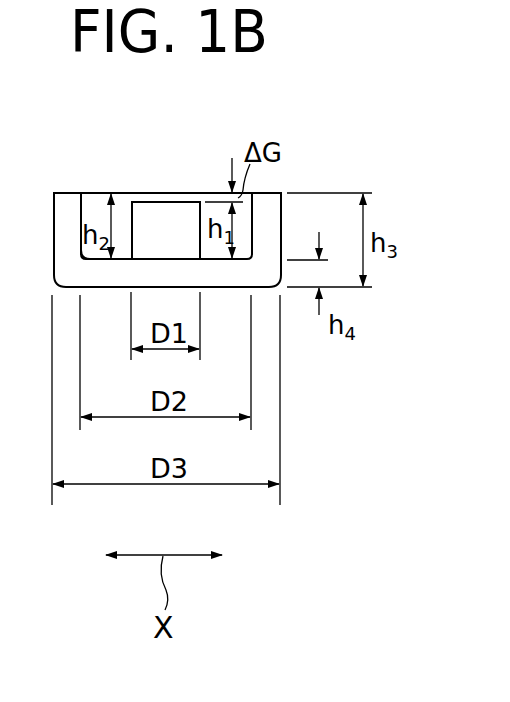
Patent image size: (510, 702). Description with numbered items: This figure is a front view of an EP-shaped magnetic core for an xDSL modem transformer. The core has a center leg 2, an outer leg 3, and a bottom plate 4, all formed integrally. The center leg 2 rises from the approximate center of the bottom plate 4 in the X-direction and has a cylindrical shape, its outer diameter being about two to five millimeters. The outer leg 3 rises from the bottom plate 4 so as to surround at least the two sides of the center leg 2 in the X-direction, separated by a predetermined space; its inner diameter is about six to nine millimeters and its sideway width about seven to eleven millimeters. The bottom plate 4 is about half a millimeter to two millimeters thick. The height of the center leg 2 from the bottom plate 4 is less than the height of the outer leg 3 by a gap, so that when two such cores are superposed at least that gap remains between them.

The center leg 2 is at (132, 214).
The outer leg 3 is at (92, 193).
The bottom plate 4 is at (92, 257).